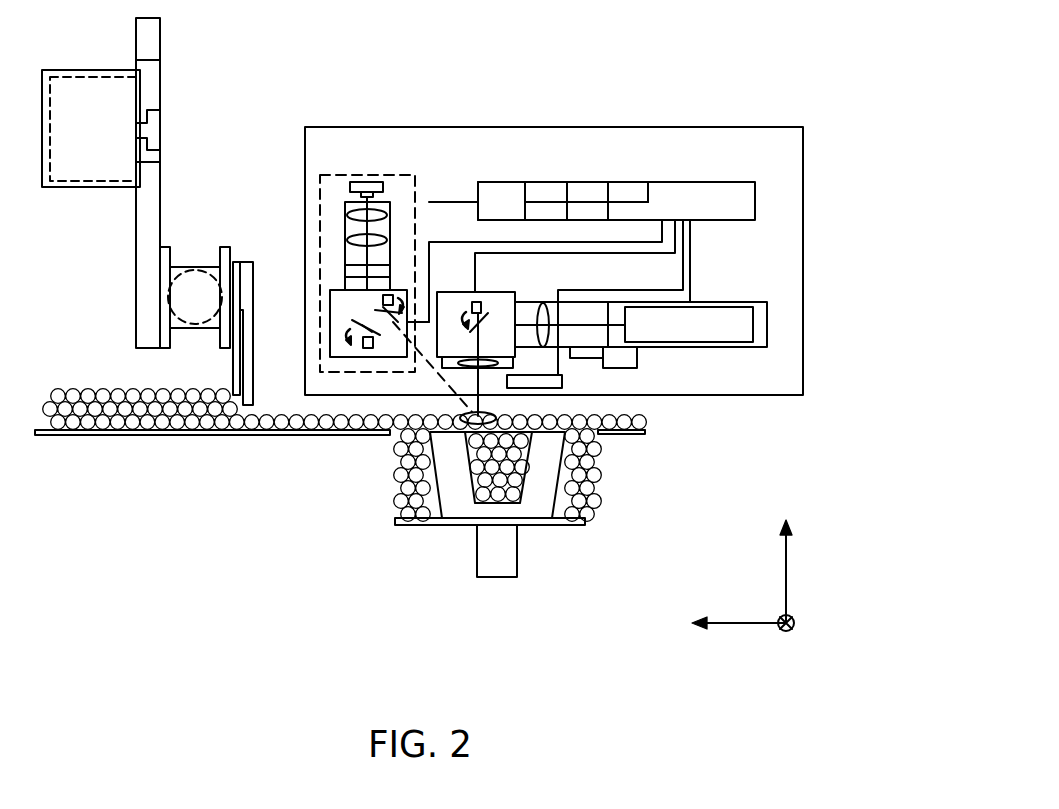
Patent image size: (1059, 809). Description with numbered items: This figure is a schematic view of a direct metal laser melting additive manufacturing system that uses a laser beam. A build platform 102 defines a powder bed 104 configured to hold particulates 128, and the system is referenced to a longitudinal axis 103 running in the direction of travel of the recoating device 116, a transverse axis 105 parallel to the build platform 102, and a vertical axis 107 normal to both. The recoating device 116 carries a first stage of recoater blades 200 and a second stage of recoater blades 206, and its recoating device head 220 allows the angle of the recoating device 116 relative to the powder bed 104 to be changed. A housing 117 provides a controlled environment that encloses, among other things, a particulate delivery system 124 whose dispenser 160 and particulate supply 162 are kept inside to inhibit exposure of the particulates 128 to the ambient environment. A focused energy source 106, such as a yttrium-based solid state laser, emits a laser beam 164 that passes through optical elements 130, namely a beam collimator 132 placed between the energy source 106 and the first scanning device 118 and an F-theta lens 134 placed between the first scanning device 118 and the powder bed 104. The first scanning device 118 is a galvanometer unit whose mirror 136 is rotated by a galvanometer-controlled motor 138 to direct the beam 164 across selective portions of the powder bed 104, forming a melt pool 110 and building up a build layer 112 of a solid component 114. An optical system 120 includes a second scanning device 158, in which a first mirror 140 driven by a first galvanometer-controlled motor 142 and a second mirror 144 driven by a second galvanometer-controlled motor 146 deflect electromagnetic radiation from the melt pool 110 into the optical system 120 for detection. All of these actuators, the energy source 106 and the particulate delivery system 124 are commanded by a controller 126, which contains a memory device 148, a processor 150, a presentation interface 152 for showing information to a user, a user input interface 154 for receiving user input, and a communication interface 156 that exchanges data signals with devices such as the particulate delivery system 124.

The build platform 102 is at (510, 555).
The longitudinal axis 103 is at (738, 624).
The powder bed 104 is at (248, 404).
The transverse axis 105 is at (798, 628).
The energy source 106 is at (745, 328).
The vertical axis 107 is at (788, 570).
The melt pool 110 is at (440, 482).
The build layer 112 is at (648, 427).
The component 114 is at (560, 500).
The recoating device 116 is at (205, 150).
The housing 117 is at (806, 378).
The first scanning device 118 is at (448, 292).
The optical system 120 is at (328, 168).
The particulate delivery system 124 is at (628, 434).
The controller 126 is at (705, 195).
The particulates 128 is at (118, 430).
The optical elements 130 is at (558, 292).
The beam collimator 132 is at (562, 376).
The F-theta lens 134 is at (600, 420).
The mirror 136 is at (440, 370).
The galvanometer-controlled motor 138 is at (492, 292).
The first mirror 140 is at (330, 326).
The first galvanometer-controlled motor 142 is at (400, 290).
The second mirror 144 is at (360, 312).
The second galvanometer-controlled motor 146 is at (354, 348).
The memory device 148 is at (537, 192).
The processor 150 is at (592, 192).
The presentation interface 152 is at (641, 194).
The user input interface 154 is at (598, 213).
The communication interface 156 is at (518, 210).
The second scanning device 158 is at (329, 290).
The dispenser 160 is at (630, 370).
The particulate supply 162 is at (600, 352).
The laser beam 164 is at (620, 368).
The first stage of recoater blades 200 is at (233, 366).
The second stage of recoater blades 206 is at (232, 431).
The recoating device head 220 is at (190, 266).